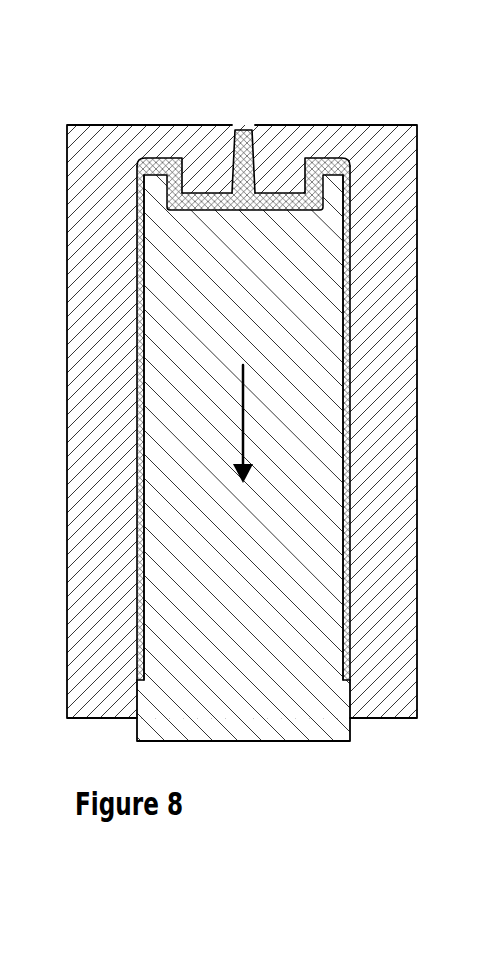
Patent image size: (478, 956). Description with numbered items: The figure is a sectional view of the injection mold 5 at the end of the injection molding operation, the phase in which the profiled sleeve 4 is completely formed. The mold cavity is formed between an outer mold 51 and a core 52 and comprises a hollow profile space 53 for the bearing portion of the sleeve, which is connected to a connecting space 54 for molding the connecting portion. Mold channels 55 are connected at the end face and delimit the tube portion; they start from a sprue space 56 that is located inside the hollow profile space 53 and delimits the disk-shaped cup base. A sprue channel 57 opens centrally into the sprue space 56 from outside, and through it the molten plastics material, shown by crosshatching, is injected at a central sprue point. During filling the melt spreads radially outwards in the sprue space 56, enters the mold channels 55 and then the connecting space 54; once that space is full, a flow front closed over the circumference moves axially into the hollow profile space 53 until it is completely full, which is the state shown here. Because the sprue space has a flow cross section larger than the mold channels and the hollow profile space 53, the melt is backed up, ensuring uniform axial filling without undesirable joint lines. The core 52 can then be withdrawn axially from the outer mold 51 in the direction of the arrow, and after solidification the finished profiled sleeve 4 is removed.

The injection mold 5 is at (263, 394).
The outer mold 51 is at (390, 259).
The profiled sleeve 4 is at (275, 405).
The core 52 is at (288, 394).
The hollow profile space 53 is at (349, 347).
The connecting space 54 is at (154, 158).
The mold channels 55 is at (137, 185).
The sprue space 56 is at (202, 193).
The sprue channel 57 is at (241, 130).